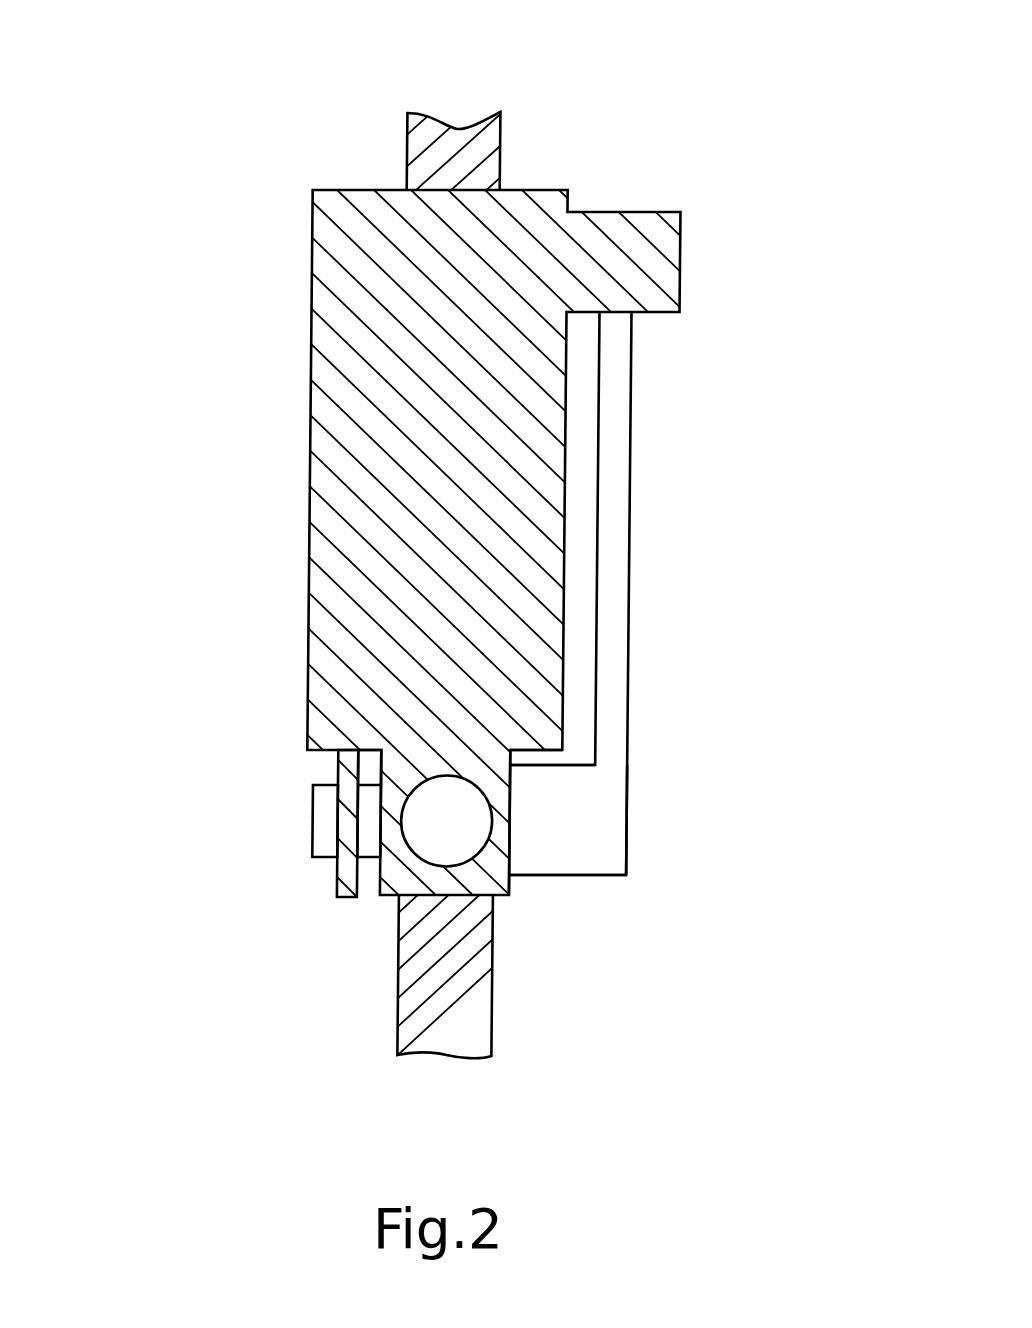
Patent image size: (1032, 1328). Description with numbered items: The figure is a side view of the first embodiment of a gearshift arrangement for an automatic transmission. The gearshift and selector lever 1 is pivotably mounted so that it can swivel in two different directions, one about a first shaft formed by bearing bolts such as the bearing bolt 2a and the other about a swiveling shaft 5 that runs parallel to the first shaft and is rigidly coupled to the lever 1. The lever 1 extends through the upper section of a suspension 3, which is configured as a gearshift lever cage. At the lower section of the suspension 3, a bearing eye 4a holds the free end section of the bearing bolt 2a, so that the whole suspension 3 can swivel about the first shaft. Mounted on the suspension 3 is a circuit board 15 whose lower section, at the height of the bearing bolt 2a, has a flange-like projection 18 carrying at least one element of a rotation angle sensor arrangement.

The gearshift and selector lever 1 is at (467, 152).
The bearing bolt 2a is at (445, 845).
The suspension 3 is at (393, 545).
The bearing eye 4a is at (477, 762).
The swiveling shaft 5 is at (322, 830).
The circuit board 15 is at (620, 648).
The flange-like projection 18 is at (567, 835).